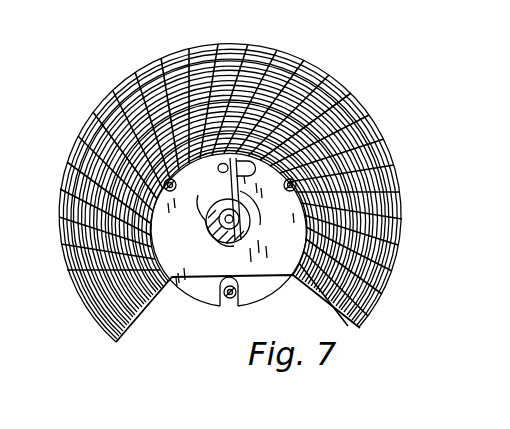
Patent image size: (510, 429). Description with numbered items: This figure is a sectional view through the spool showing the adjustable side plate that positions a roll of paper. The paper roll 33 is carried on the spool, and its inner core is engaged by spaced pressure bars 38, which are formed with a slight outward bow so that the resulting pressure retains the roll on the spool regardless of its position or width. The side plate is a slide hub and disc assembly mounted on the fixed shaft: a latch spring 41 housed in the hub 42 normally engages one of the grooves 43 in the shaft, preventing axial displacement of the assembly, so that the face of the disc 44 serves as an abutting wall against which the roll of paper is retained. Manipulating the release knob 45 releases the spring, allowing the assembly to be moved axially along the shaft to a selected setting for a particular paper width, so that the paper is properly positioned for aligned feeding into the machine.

The paper roll 33 is at (317, 82).
The pressure bars 38 is at (289, 177).
The latch spring 41 is at (260, 208).
The hub 42 is at (199, 217).
The grooves 43 is at (214, 236).
The disc 44 is at (284, 233).
The release knob 45 is at (210, 160).